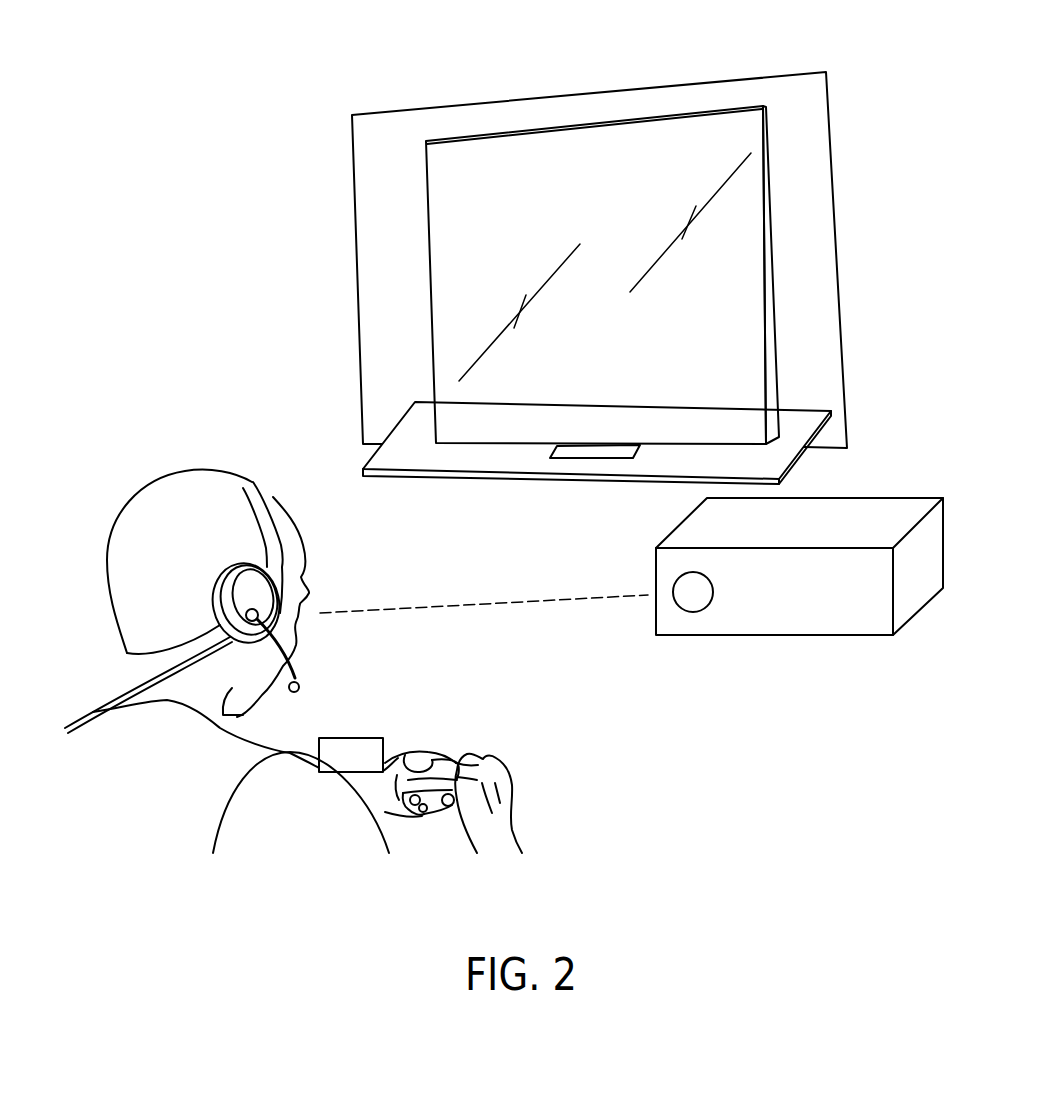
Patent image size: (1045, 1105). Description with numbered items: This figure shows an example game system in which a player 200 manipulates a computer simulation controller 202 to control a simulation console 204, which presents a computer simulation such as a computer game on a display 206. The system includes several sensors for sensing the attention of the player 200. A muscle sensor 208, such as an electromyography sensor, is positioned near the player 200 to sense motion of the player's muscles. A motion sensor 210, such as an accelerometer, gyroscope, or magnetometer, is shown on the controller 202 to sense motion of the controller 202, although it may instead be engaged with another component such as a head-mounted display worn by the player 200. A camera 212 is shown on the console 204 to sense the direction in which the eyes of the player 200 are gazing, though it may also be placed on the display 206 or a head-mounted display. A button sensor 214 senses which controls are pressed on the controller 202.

The player 200 is at (110, 528).
The computer simulation controller 202 is at (485, 781).
The simulation console 204 is at (907, 498).
The display 206 is at (598, 133).
The muscle sensor 208 is at (363, 738).
The motion sensor 210 is at (462, 755).
The camera 212 is at (693, 603).
The button sensor 214 is at (423, 752).